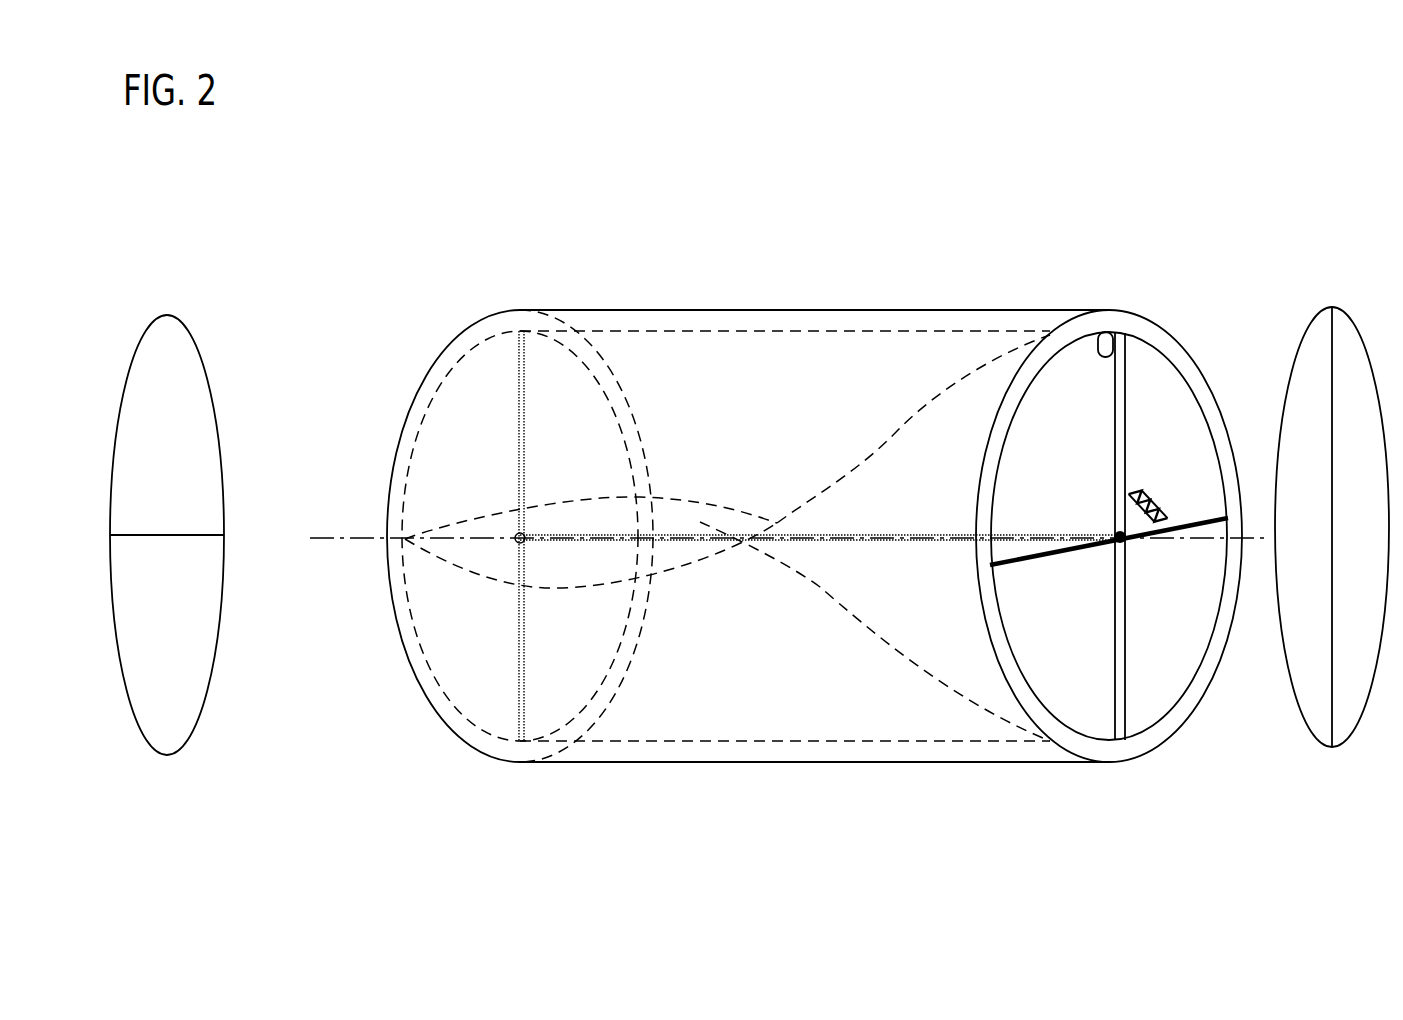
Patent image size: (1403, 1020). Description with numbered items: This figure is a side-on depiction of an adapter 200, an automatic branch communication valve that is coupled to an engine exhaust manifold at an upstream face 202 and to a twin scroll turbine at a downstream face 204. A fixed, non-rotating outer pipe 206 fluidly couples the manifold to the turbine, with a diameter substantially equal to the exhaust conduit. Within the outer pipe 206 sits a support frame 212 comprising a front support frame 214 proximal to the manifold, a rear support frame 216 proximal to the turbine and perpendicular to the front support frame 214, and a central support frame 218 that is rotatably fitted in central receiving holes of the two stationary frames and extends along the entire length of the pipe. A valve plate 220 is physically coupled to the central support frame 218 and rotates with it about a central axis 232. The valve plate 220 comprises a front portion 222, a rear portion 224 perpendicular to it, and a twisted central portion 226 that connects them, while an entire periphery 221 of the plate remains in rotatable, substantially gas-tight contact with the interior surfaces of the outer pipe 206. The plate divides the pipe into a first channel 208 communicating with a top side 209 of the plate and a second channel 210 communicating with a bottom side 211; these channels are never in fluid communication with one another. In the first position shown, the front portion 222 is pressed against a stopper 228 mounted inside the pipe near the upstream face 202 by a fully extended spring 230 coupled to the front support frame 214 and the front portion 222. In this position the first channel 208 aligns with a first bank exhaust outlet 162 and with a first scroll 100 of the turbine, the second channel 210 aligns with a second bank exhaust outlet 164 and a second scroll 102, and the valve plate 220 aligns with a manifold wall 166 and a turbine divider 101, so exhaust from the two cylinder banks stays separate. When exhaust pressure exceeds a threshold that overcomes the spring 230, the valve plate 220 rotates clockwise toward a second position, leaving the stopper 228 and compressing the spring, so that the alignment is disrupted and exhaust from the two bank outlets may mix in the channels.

The first scroll 100 is at (181, 461).
The divider 101 is at (154, 534).
The second scroll 102 is at (183, 625).
The first bank exhaust outlet 162 is at (1379, 543).
The second bank exhaust outlet 164 is at (1321, 543).
The wall 166 is at (1332, 493).
The adapter 200 is at (371, 133).
The upstream face 202 is at (1119, 233).
The downstream face 204 is at (314, 406).
The outer pipe 206 is at (770, 310).
The first channel 208 is at (696, 396).
The top side 209 is at (658, 528).
The second channel 210 is at (766, 693).
The bottom side 211 is at (933, 486).
The support frame 212 is at (830, 566).
The front support frame 214 is at (1207, 527).
The rear support frame 216 is at (518, 667).
The central support frame 218 is at (928, 546).
The valve plate 220 is at (778, 426).
The periphery 221 is at (687, 507).
The front portion 222 is at (1123, 423).
The rear portion 224 is at (432, 534).
The central portion 226 is at (753, 525).
The stopper 228 is at (1107, 358).
The spring 230 is at (1150, 490).
The central axis 232 is at (342, 541).